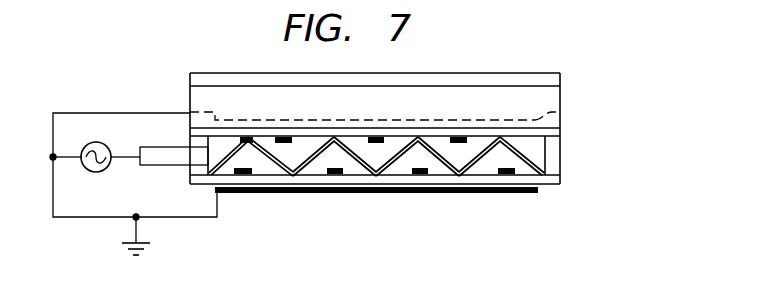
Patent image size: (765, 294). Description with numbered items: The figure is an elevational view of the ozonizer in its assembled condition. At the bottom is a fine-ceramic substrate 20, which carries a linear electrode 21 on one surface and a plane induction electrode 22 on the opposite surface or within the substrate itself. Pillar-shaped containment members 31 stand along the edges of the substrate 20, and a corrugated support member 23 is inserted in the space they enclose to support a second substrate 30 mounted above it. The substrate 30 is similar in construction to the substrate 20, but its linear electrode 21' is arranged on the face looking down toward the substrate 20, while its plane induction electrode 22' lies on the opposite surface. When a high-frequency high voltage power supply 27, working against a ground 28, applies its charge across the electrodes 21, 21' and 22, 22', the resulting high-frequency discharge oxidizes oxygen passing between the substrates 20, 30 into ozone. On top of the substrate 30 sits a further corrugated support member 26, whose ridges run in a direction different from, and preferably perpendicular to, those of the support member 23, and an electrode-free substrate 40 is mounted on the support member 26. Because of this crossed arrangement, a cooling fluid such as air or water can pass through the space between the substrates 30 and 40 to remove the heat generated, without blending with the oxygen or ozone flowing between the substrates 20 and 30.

The substrate 40 is at (355, 80).
The corrugated support member 26 is at (562, 99).
The plane induction electrode 22' is at (403, 109).
The substrate 30 is at (356, 128).
The pillar-shaped containment members 31 is at (555, 152).
The corrugated support member 23 is at (441, 158).
The linear electrode 21' is at (353, 193).
The linear electrode 21 is at (409, 209).
The substrate 20 is at (357, 188).
The plane induction electrode 22 is at (376, 217).
The high-frequency high voltage power supply 27 is at (99, 172).
The ground 28 is at (124, 243).